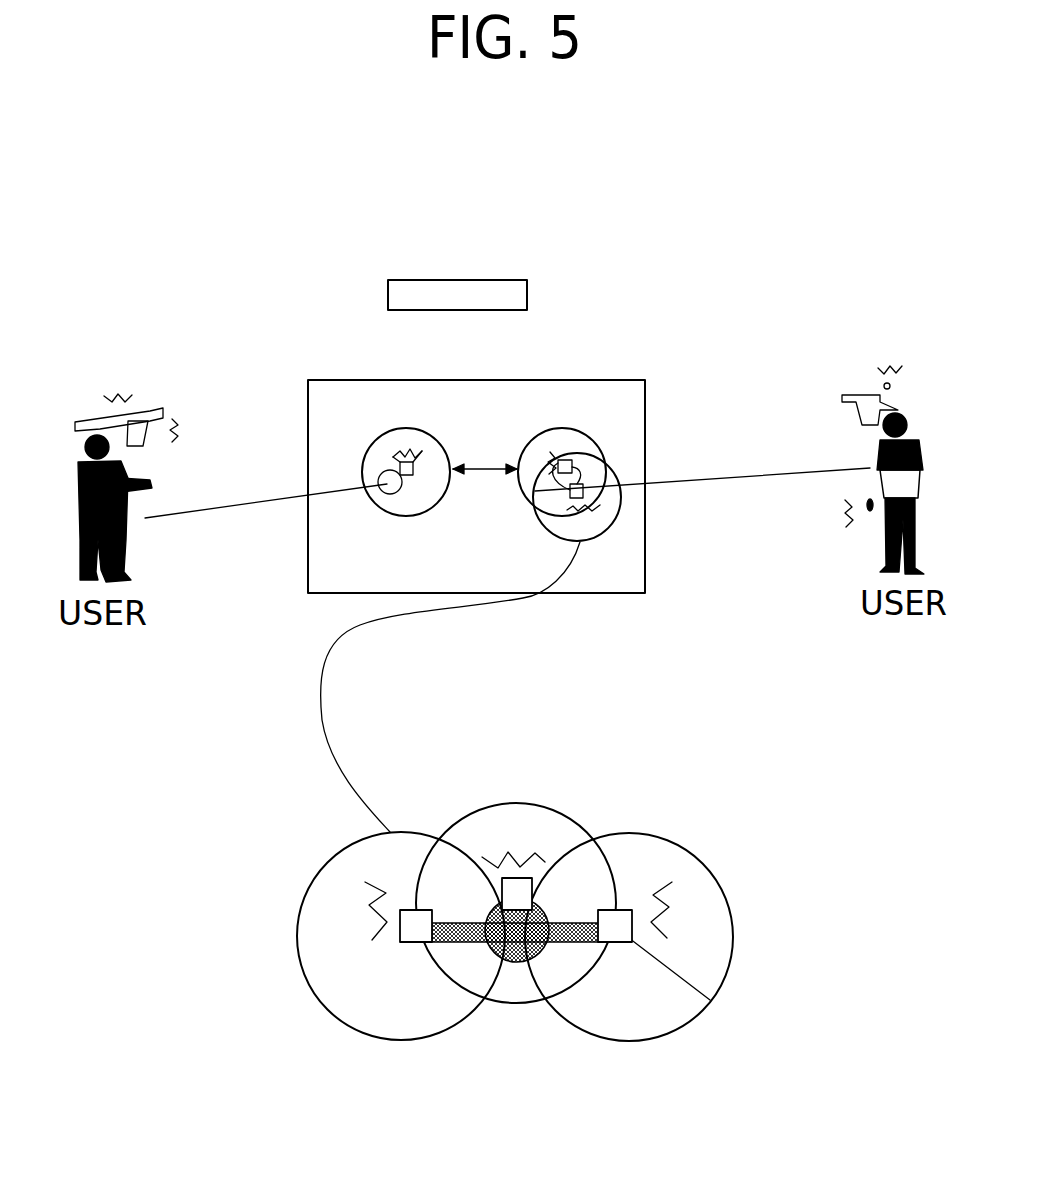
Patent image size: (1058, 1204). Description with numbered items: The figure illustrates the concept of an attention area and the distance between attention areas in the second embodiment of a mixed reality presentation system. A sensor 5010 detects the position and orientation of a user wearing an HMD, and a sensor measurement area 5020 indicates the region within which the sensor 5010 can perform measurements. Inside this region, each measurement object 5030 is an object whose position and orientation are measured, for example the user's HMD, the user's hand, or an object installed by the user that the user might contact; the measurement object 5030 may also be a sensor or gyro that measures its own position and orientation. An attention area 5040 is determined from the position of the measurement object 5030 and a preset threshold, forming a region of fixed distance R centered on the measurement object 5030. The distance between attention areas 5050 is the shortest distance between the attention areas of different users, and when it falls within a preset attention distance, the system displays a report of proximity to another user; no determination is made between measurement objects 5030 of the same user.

The sensor 5010 is at (467, 280).
The sensor measurement area 5020 is at (597, 597).
The measurement object 5030 is at (418, 912).
The attention area 5040 is at (733, 927).
The distance between attention areas 5050 is at (478, 465).